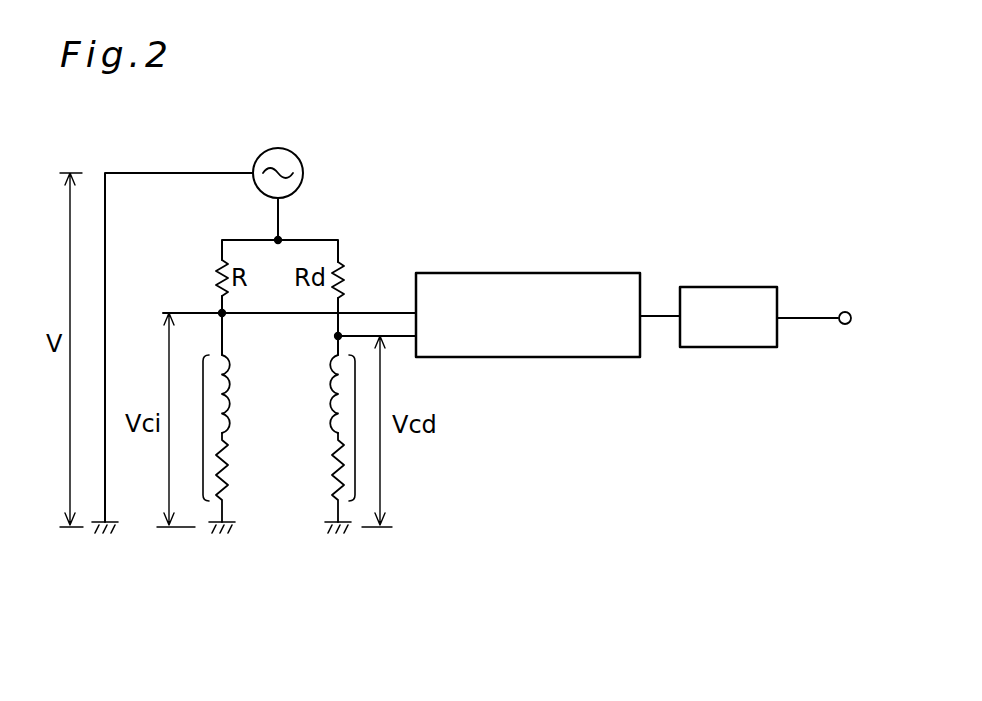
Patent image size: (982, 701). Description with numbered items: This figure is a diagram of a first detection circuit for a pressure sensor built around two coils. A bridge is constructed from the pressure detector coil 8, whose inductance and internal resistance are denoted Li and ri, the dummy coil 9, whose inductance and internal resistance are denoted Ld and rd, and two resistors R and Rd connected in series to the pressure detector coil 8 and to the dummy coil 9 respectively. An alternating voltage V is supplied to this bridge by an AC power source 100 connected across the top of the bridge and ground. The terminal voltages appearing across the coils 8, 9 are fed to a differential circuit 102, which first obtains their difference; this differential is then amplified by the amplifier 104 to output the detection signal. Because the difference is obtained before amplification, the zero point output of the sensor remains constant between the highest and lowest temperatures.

The AC power source 100 is at (302, 160).
The pressure detector coil 8 is at (196, 425).
The dummy coil 9 is at (358, 425).
The differential circuit 102 is at (608, 273).
The amplifier 104 is at (760, 287).